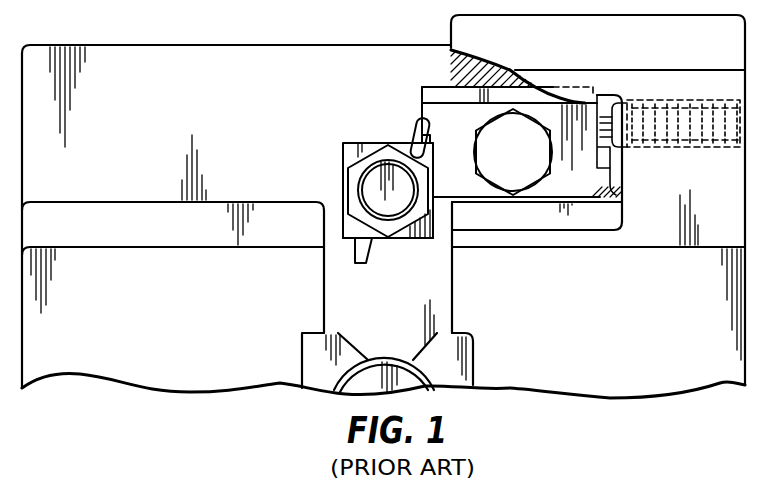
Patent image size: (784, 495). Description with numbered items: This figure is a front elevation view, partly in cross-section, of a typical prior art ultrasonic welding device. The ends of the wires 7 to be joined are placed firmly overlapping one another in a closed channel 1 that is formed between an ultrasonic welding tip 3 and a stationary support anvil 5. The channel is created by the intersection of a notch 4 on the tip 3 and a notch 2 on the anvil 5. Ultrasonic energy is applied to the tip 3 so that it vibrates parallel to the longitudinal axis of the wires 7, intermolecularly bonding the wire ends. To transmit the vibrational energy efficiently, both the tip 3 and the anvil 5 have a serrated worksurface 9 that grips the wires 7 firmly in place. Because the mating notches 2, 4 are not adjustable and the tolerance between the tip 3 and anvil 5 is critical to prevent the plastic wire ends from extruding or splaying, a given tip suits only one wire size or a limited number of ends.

The closed channel 1 is at (430, 139).
The notch 2 is at (432, 143).
The ultrasonic welding tip 3 is at (420, 240).
The notch 4 is at (352, 255).
The stationary support anvil 5 is at (473, 188).
The wires 7 is at (417, 130).
The serrated worksurface 9 is at (420, 120).